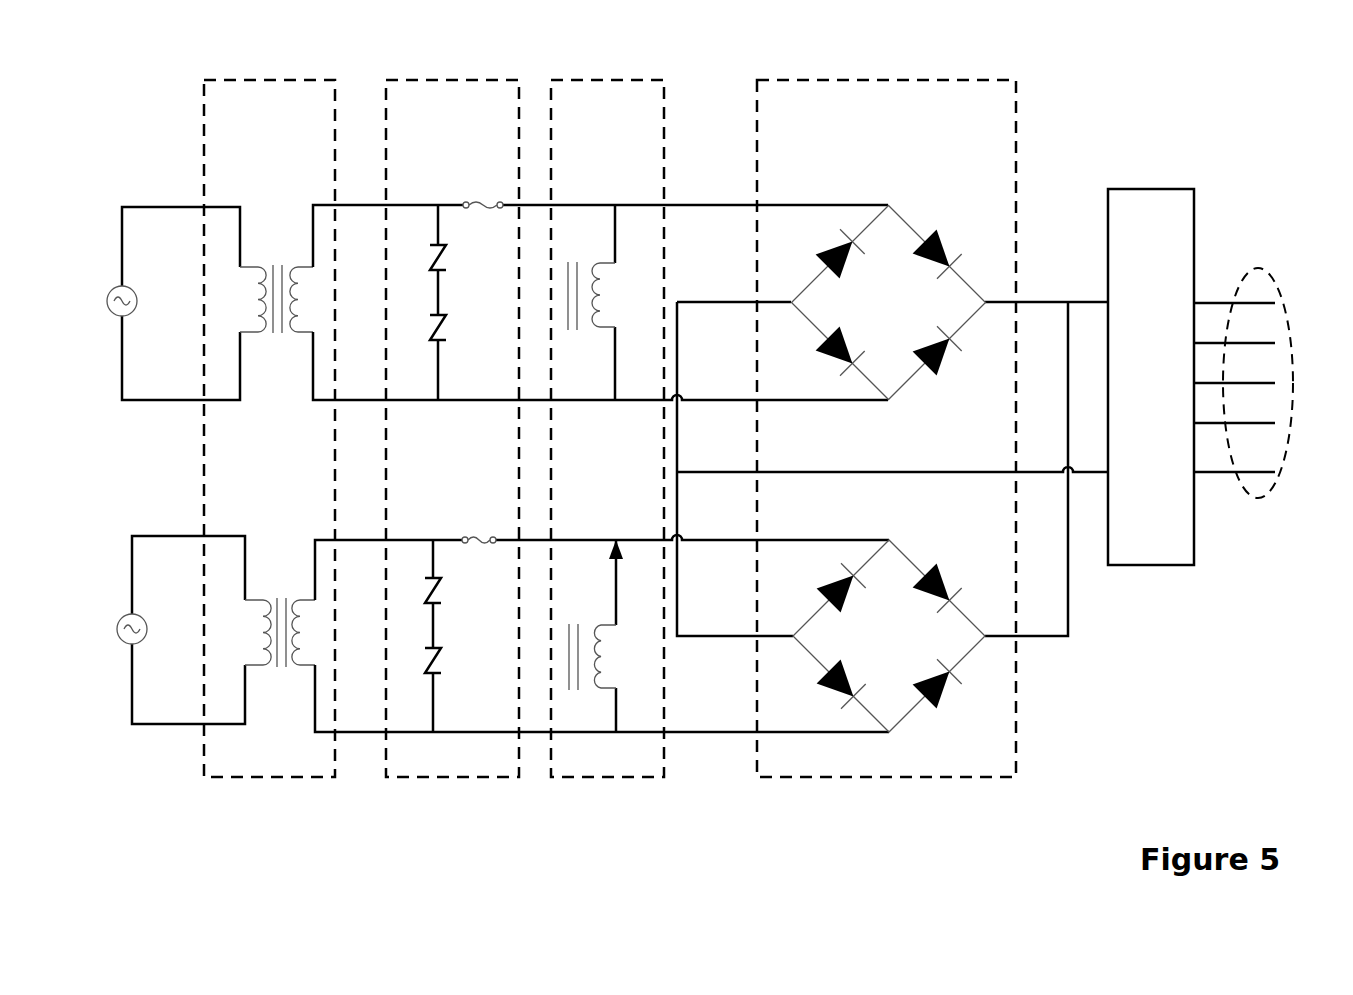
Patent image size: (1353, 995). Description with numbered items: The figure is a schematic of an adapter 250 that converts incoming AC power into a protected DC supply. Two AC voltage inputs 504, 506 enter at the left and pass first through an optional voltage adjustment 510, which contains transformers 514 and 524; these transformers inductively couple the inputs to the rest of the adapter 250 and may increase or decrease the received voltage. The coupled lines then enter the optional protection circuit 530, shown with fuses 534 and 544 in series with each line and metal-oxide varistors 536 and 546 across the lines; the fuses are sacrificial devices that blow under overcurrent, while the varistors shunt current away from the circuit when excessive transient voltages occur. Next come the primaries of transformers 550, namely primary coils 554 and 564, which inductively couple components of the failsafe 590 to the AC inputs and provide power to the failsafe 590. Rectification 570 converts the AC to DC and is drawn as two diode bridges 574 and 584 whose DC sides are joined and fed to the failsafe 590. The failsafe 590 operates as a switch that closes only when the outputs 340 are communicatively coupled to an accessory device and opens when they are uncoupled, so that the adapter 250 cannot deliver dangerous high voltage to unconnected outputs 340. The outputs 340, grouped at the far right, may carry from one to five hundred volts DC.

The adapter 250 is at (153, 41).
The AC voltage input 504 is at (172, 286).
The AC voltage input 506 is at (173, 614).
The voltage adjustment 510 is at (291, 116).
The transformer 514 is at (280, 190).
The transformer 524 is at (278, 521).
The protection circuit 530 is at (475, 116).
The fuse 534 is at (485, 190).
The metal-oxide varistor 536 is at (453, 258).
The fuse 544 is at (480, 523).
The metal-oxide varistor 546 is at (453, 590).
The primaries of transformers 550 is at (630, 116).
The primary of transformer 554 is at (606, 190).
The primary of transformer 564 is at (621, 523).
The rectification 570 is at (909, 116).
The diode bridge 574 is at (888, 192).
The diode bridge 584 is at (890, 523).
The failsafe 590 is at (1174, 232).
The outputs 340 is at (1272, 270).